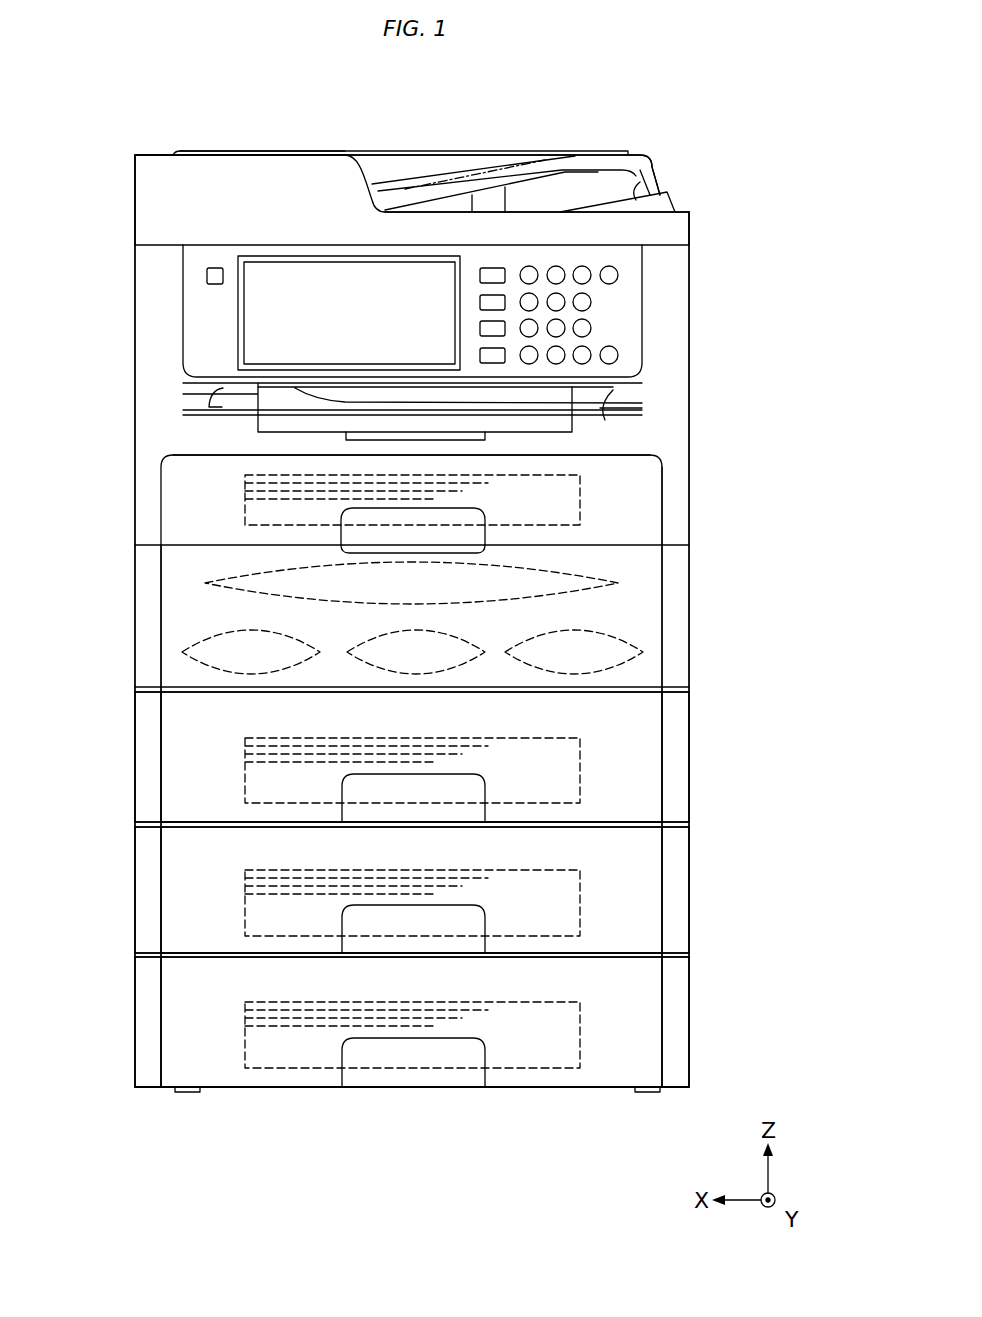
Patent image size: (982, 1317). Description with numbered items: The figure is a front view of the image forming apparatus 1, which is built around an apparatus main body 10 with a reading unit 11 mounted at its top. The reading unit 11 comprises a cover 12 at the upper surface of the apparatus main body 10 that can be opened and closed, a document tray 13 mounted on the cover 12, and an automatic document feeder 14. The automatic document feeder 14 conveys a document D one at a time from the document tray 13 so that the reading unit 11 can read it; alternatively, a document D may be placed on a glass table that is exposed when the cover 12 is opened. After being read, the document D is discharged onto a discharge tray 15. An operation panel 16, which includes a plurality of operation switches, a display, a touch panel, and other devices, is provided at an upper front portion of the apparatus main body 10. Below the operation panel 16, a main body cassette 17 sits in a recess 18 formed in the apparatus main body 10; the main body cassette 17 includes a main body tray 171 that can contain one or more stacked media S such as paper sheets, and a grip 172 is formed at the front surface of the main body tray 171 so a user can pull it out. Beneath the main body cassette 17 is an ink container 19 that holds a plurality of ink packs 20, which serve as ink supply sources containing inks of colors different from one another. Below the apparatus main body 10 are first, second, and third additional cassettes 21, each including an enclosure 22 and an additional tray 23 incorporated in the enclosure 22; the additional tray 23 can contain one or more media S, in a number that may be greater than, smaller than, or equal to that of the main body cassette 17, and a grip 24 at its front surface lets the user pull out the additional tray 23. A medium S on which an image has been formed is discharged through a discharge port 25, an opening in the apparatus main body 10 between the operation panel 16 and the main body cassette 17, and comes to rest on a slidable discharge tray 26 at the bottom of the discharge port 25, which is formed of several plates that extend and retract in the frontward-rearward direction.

The image forming apparatus 1 is at (667, 110).
The apparatus main body 10 is at (690, 292).
The reading unit 11 is at (128, 193).
The cover 12 is at (690, 232).
The document tray 13 is at (548, 163).
The automatic document feeder 14 is at (245, 163).
The discharge tray 15 is at (650, 195).
The operation panel 16 is at (190, 298).
The main body cassette 17 is at (150, 449).
The main body tray 171 is at (640, 497).
The grip 172 is at (484, 515).
The recess 18 is at (654, 518).
The ink container 19 is at (152, 577).
The ink packs 20 is at (578, 572).
The additional cassettes 21 is at (693, 711).
The enclosure 22 is at (690, 752).
The additional tray 23 is at (652, 785).
The grip 24 is at (372, 774).
The discharge port 25 is at (633, 388).
The discharge tray 26 is at (200, 404).
The media S is at (245, 512).
The document D is at (445, 163).